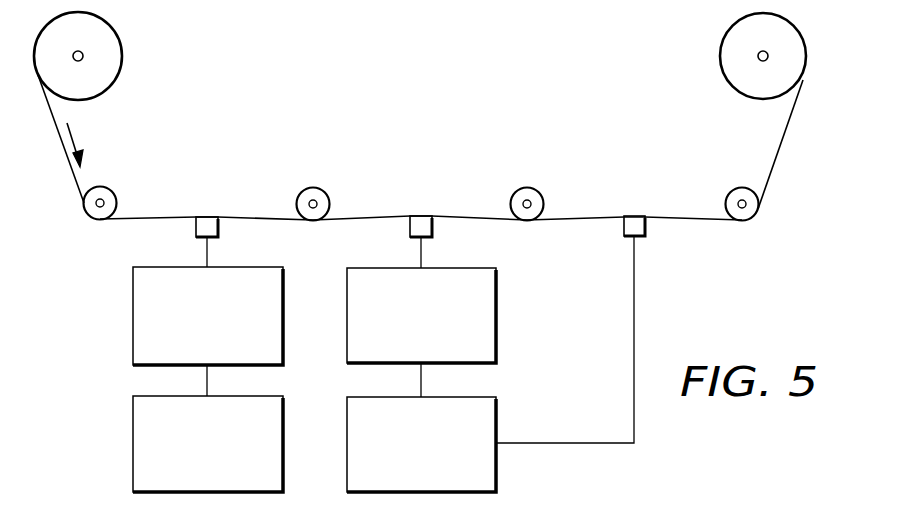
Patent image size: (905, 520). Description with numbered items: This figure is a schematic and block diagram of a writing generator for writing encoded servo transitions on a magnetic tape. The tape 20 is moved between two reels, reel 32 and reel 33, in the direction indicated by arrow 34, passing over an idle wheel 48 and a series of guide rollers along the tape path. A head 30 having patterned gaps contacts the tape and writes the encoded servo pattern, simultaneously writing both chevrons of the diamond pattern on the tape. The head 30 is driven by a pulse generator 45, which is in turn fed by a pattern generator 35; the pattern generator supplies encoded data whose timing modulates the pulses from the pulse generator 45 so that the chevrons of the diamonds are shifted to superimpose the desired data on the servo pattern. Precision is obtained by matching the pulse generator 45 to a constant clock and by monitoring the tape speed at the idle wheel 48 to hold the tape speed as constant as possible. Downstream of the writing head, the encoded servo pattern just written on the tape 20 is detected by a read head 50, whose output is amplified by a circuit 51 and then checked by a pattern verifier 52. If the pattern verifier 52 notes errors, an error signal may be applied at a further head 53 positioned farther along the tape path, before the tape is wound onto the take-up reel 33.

The tape 20 is at (72, 182).
The reel 32 is at (123, 56).
The reel 33 is at (720, 55).
The arrow 34 is at (73, 137).
The idle wheel 48 is at (93, 220).
The head 30 is at (219, 228).
The read head 50 is at (433, 228).
The head 53 is at (646, 228).
The pulse generator 45 is at (133, 322).
The pattern generator 35 is at (133, 449).
The circuit 51 is at (497, 320).
The pattern verifier 52 is at (497, 465).